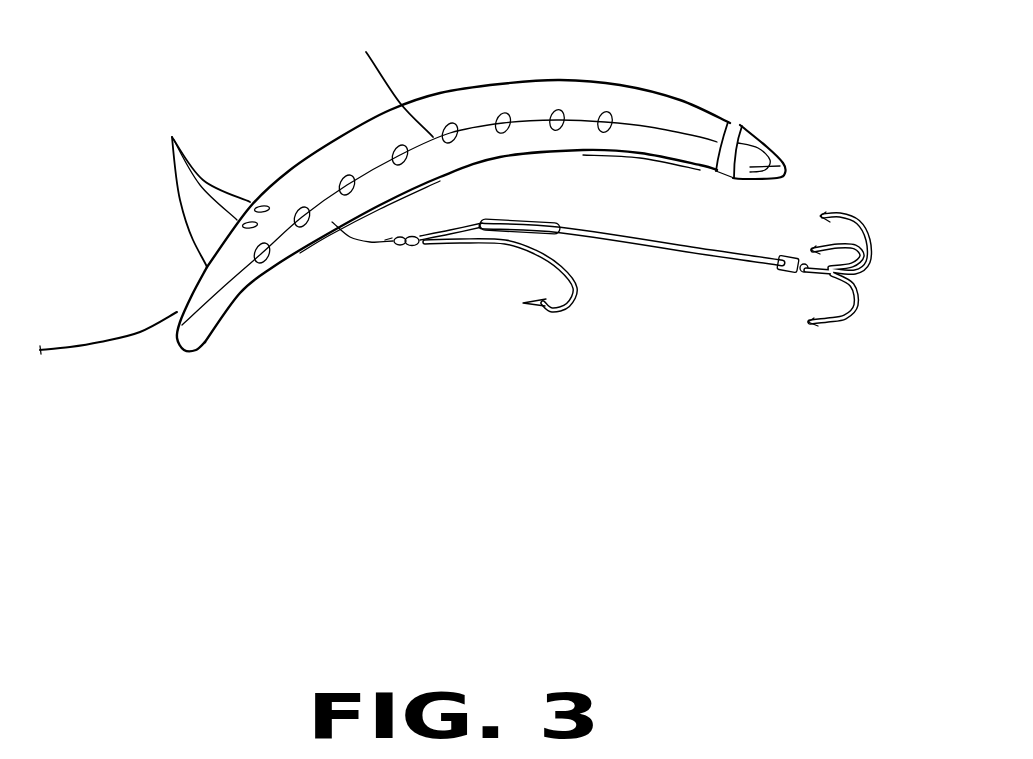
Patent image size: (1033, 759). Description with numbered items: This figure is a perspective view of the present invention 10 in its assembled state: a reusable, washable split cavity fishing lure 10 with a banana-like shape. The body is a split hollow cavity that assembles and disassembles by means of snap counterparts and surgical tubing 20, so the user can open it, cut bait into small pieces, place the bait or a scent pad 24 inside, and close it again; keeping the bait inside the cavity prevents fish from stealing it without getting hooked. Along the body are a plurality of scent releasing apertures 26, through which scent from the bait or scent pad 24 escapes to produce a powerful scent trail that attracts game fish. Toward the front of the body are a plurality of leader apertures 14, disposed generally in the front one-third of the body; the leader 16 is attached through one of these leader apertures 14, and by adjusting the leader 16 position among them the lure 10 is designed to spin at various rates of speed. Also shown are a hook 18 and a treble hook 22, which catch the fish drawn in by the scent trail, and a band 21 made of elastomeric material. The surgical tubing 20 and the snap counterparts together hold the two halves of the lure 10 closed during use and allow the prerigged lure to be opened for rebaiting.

The fishing lure 10 is at (727, 124).
The leader apertures 14 is at (172, 137).
The leader 16 is at (108, 338).
The hook 18 is at (533, 313).
The surgical tubing 20 is at (673, 248).
The band 21 is at (727, 179).
The treble hook 22 is at (847, 313).
The scent pad 24 is at (348, 175).
The scent releasing apertures 26 is at (453, 130).